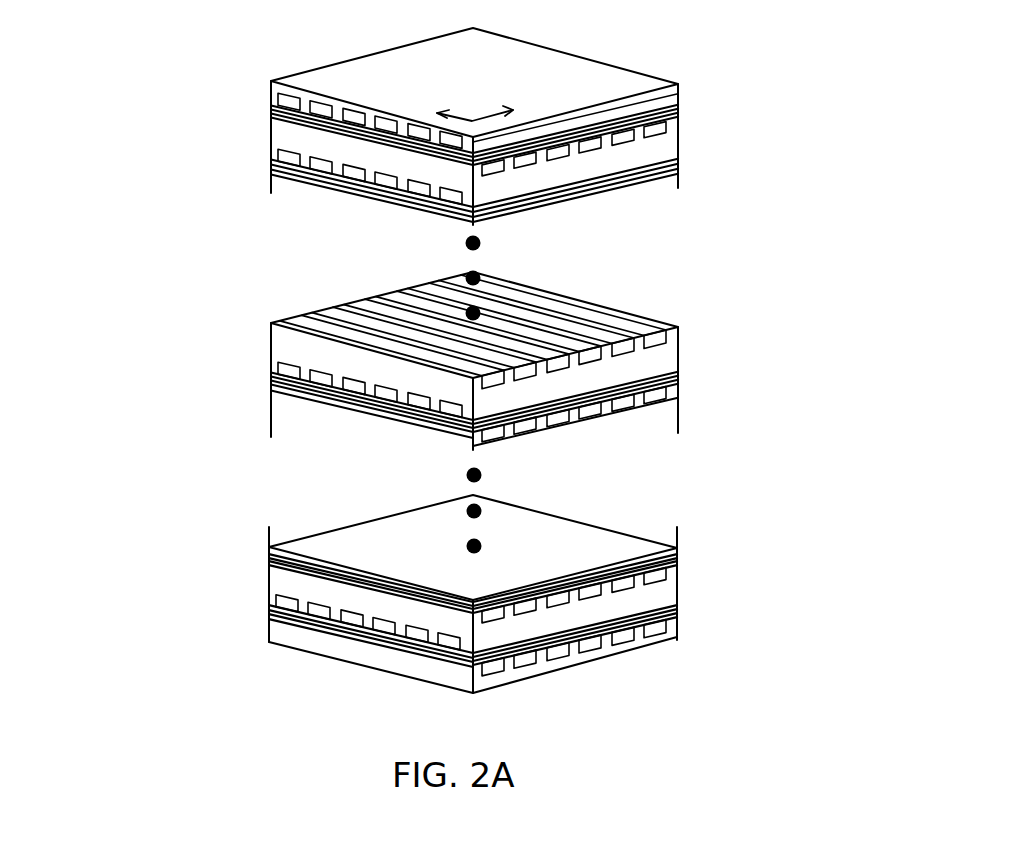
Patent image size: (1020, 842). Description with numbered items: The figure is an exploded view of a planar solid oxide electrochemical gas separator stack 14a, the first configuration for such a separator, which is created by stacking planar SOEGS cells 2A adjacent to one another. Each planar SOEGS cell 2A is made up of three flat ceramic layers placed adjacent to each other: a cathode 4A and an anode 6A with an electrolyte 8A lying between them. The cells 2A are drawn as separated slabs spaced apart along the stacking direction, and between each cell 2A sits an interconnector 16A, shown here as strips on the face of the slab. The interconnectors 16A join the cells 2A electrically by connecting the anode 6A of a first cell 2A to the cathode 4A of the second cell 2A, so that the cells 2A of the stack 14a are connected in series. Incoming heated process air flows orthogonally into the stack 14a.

The planar SOEGS stack 14a is at (120, 18).
The SOEGS cell 2A is at (706, 86).
The interconnector 16A is at (318, 358).
The anode 6A is at (678, 373).
The electrolyte 8A is at (678, 379).
The cathode 4A is at (678, 385).